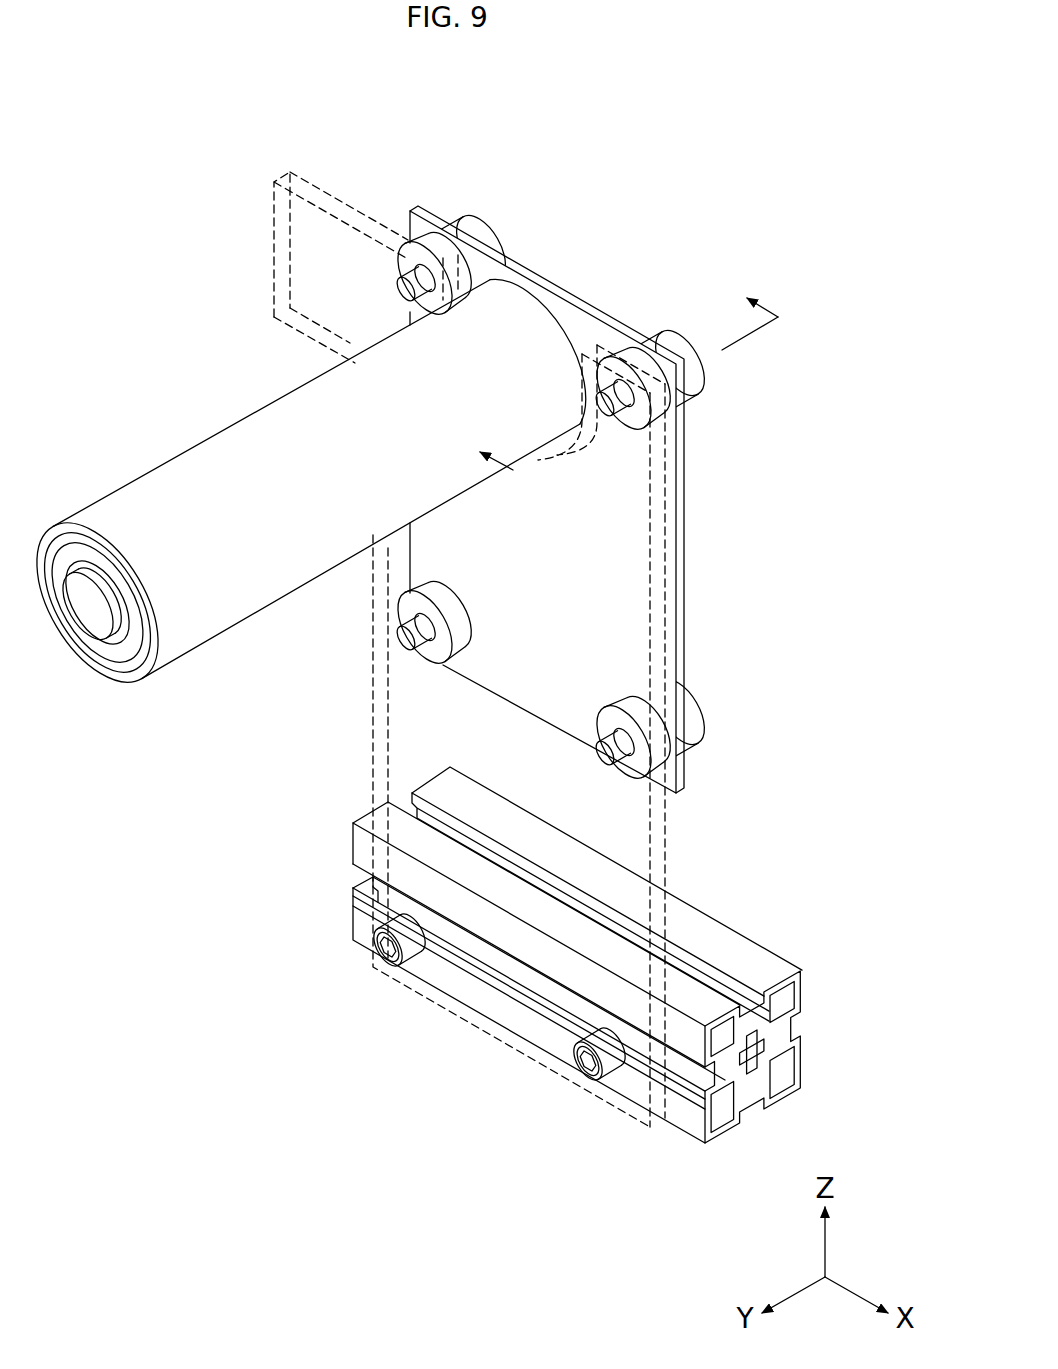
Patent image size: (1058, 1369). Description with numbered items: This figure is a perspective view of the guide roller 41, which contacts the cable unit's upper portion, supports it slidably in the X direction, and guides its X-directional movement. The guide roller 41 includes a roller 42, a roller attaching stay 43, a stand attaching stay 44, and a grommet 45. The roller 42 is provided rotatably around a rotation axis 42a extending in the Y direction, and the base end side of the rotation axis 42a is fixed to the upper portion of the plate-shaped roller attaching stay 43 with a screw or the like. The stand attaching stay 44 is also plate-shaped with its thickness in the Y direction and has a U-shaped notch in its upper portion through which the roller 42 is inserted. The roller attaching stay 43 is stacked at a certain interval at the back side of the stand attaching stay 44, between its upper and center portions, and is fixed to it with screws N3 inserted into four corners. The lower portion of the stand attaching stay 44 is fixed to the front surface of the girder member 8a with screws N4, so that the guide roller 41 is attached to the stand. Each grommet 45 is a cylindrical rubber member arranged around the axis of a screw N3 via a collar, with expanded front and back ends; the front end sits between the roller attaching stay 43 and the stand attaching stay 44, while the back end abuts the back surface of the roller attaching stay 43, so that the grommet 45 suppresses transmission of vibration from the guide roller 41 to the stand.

The guide roller 41 is at (742, 148).
The roller 42 is at (158, 492).
The rotation axis 42a is at (84, 617).
The roller attaching stay 43 is at (683, 548).
The stand attaching stay 44 is at (420, 738).
The grommet 45 is at (432, 247).
The screw N3 is at (493, 242).
The screw N4 is at (413, 950).
The girder member 8a is at (770, 962).